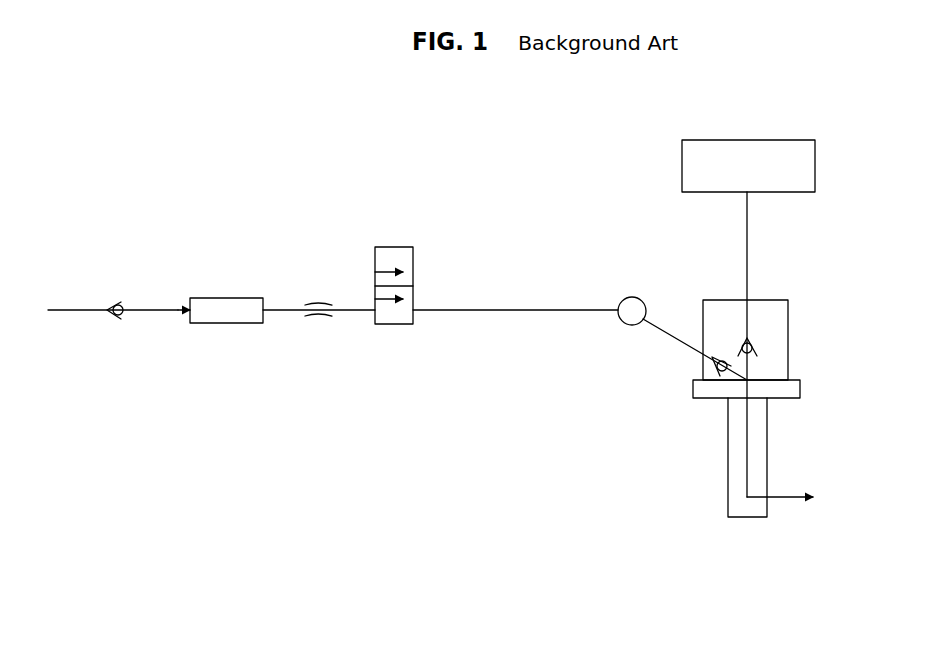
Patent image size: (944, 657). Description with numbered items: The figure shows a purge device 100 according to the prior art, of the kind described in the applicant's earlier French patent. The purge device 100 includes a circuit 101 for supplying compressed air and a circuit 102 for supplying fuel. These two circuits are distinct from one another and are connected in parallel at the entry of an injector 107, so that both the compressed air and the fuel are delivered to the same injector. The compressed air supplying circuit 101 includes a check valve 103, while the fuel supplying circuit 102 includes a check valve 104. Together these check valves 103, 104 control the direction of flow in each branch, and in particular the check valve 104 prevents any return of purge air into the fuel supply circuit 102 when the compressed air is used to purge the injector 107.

The purge device 100 is at (347, 132).
The circuit for supplying compressed air 101 is at (393, 246).
The circuit for supplying fuel 102 is at (637, 212).
The check valve 103 is at (720, 354).
The check valve 104 is at (760, 342).
The injector 107 is at (726, 452).